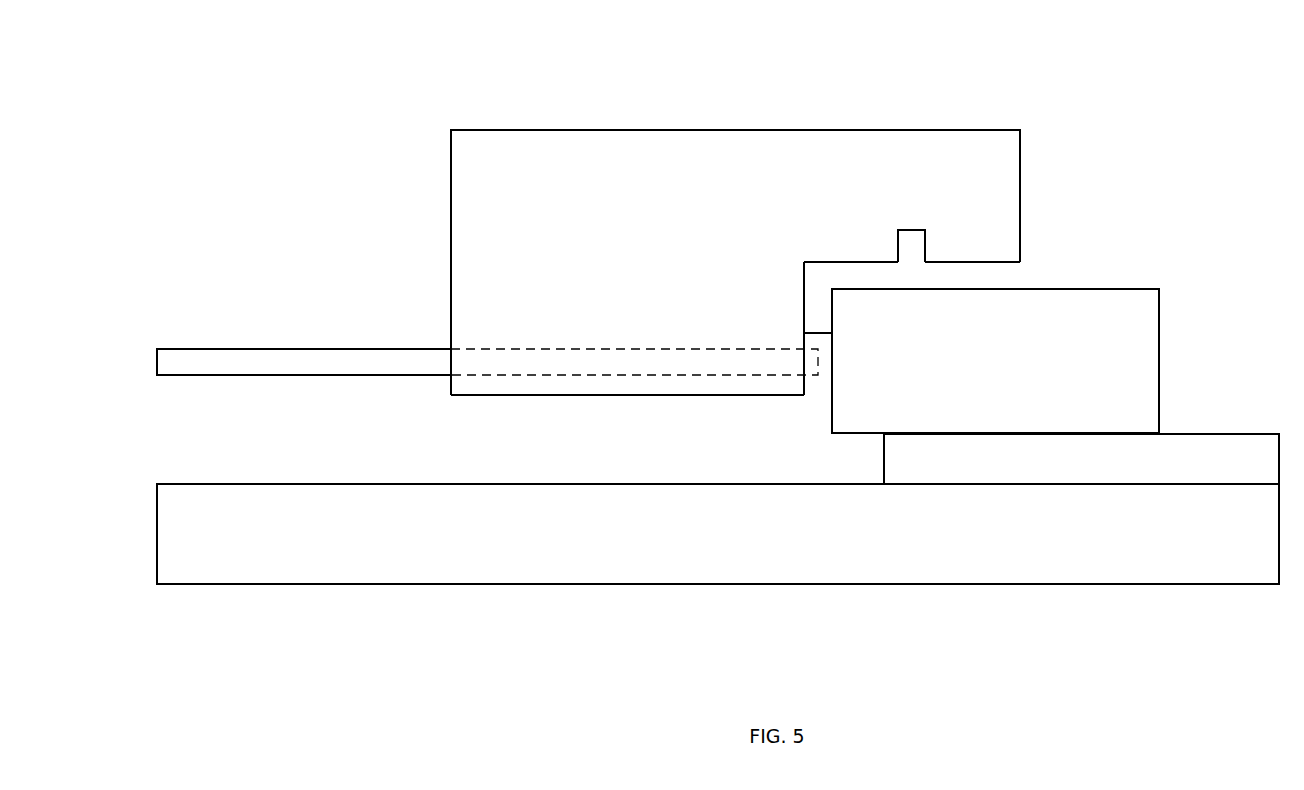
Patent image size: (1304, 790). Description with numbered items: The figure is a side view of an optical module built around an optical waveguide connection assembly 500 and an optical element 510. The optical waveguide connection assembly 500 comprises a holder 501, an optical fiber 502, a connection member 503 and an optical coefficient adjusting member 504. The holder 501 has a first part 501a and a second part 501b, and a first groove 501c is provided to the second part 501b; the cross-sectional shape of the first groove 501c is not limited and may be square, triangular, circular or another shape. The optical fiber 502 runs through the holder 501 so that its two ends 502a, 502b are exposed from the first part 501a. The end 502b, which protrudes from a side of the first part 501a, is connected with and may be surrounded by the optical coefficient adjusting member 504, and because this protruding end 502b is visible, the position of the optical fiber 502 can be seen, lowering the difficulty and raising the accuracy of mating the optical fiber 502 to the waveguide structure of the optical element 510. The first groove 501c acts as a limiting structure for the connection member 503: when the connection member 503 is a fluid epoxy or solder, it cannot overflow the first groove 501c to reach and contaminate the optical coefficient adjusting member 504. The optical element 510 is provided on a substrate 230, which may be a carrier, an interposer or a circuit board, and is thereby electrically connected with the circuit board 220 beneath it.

The optical waveguide connection assembly 500 is at (769, 333).
The holder 501 is at (735, 210).
The first part 501a is at (655, 142).
The second part 501b is at (825, 142).
The first groove 501c is at (910, 167).
The connection member 503 is at (972, 278).
The optical coefficient adjusting member 504 is at (825, 383).
The optical fiber 502 is at (487, 461).
The end of optical fiber 502a is at (244, 362).
The end of optical fiber 502b is at (812, 363).
The optical element 510 is at (976, 377).
The substrate 230 is at (1063, 473).
The circuit board 220 is at (699, 549).